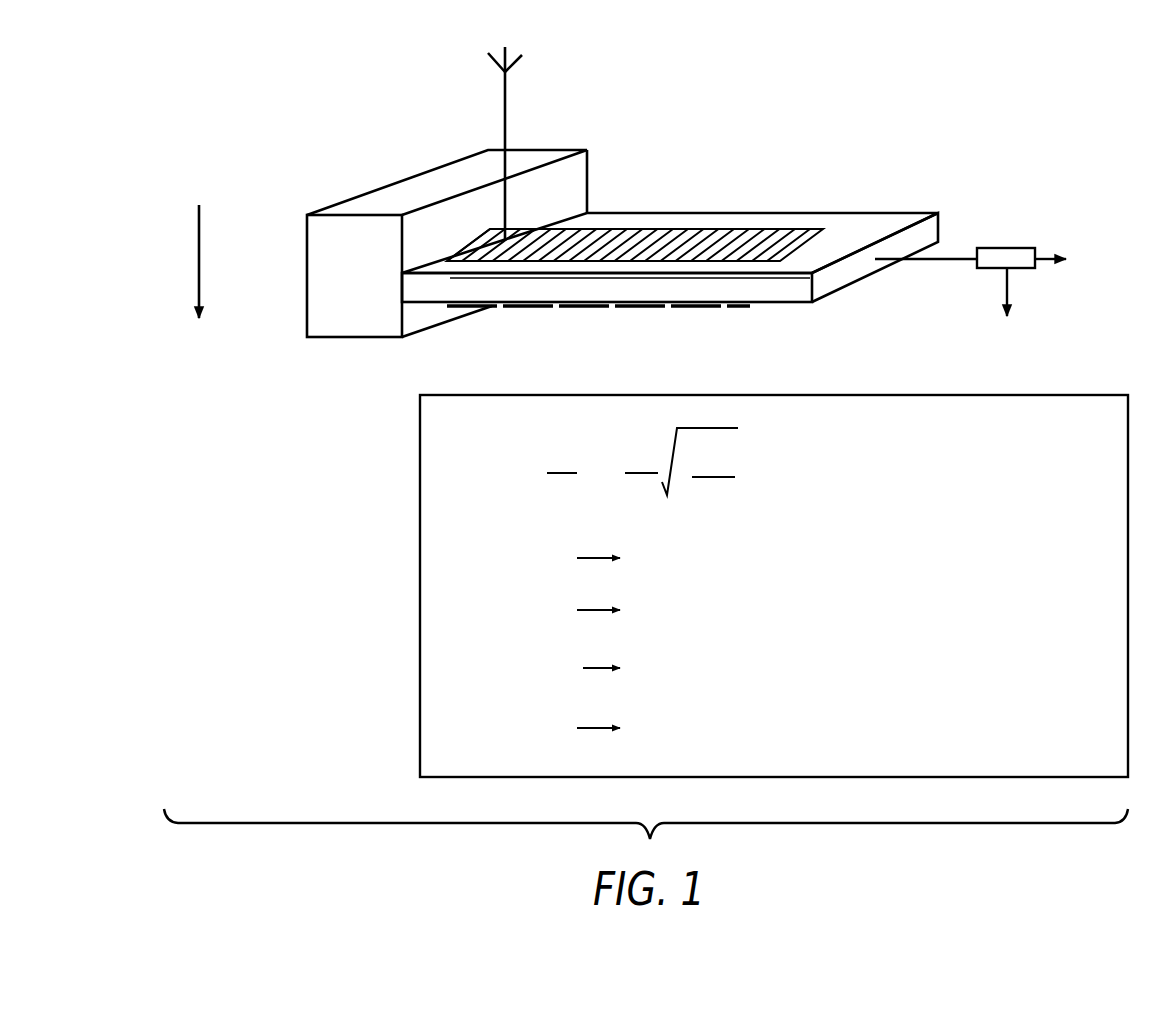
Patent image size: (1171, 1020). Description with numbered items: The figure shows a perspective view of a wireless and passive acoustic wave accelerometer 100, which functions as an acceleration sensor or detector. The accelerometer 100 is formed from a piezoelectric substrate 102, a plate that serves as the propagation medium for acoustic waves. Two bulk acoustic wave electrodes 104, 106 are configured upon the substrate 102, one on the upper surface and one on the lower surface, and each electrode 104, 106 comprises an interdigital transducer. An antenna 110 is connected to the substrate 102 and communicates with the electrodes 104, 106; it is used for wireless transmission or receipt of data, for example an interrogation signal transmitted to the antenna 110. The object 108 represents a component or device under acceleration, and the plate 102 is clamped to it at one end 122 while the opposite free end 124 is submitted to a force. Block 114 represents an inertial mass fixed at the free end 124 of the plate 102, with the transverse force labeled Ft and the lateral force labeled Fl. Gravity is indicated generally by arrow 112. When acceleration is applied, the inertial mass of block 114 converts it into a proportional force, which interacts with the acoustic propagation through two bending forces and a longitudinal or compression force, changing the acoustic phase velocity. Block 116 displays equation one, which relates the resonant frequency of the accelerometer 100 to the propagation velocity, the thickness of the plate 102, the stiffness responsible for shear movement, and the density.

The wireless and passive acoustic wave accelerometer 100 is at (884, 70).
The piezoelectric substrate 102 is at (925, 230).
The BAW electrode 104 is at (757, 222).
The BAW electrode 106 is at (647, 308).
The object 108 is at (573, 183).
The antenna 110 is at (510, 77).
The arrow 112 is at (202, 270).
The block 114 is at (1033, 275).
The block 116 is at (1056, 467).
The clamped end 122 is at (400, 290).
The free end 124 is at (837, 312).